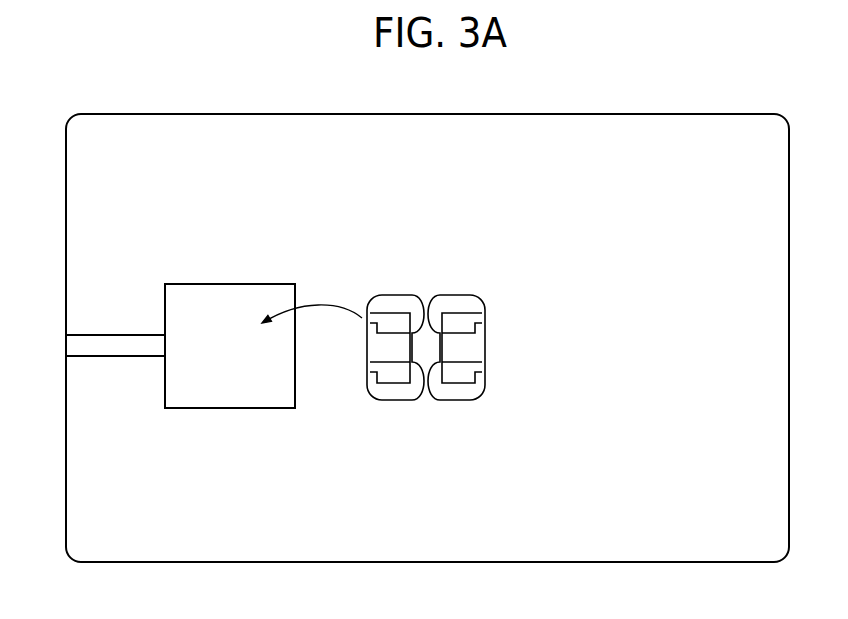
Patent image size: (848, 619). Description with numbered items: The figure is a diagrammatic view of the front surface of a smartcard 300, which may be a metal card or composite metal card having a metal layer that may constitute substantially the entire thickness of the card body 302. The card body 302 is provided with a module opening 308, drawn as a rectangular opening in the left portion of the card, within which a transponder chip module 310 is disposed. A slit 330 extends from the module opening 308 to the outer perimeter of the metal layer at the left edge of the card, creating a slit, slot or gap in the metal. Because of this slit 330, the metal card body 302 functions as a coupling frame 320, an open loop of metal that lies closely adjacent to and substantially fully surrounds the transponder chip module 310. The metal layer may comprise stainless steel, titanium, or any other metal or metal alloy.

The smartcard 300 is at (133, 58).
The card body 302 is at (290, 110).
The coupling frame 320 is at (60, 248).
The slit 330 is at (60, 350).
The module opening 308 is at (222, 282).
The transponder chip module 310 is at (433, 279).